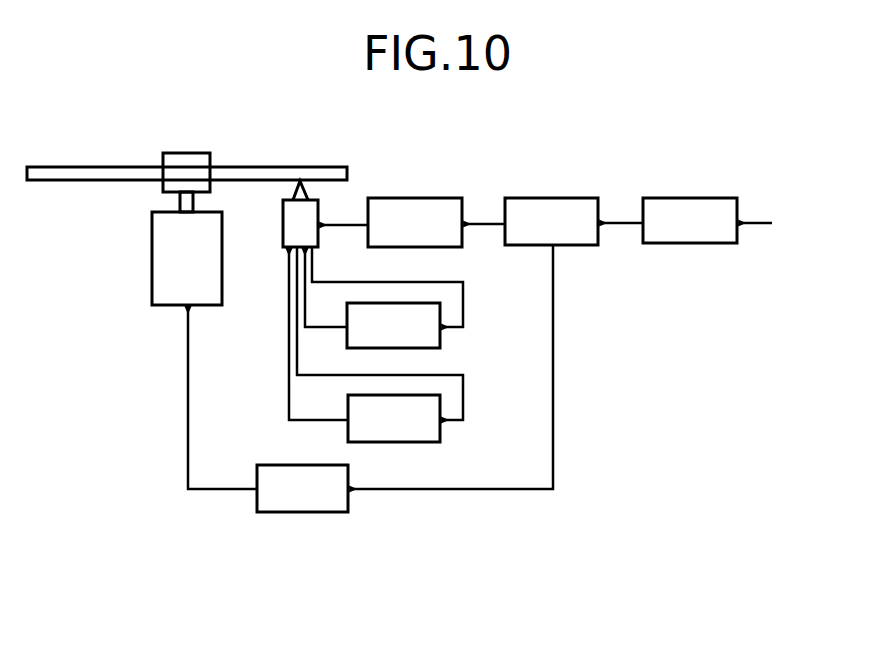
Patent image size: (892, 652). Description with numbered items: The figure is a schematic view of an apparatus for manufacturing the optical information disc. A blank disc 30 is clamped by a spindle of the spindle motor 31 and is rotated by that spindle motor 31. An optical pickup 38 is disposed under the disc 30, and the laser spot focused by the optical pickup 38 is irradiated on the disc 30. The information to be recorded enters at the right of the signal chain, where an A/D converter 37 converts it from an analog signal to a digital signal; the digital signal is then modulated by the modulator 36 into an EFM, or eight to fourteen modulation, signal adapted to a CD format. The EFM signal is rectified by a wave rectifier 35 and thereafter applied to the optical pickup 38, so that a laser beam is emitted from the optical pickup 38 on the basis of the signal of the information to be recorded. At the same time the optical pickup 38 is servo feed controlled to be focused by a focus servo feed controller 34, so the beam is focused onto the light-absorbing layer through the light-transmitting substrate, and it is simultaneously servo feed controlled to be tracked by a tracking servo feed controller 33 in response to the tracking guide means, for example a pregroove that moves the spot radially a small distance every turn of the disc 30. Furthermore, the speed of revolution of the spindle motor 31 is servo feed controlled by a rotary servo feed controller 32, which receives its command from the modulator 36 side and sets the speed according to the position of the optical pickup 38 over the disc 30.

The blank disc 30 is at (317, 172).
The spindle motor 31 is at (178, 265).
The rotary servo feed controller 32 is at (285, 502).
The tracking servo feed controller 33 is at (415, 423).
The focus servo feed controller 34 is at (412, 332).
The wave rectifier 35 is at (422, 210).
The modulator 36 is at (562, 210).
The A/D converter 37 is at (698, 210).
The optical pickup 38 is at (295, 227).